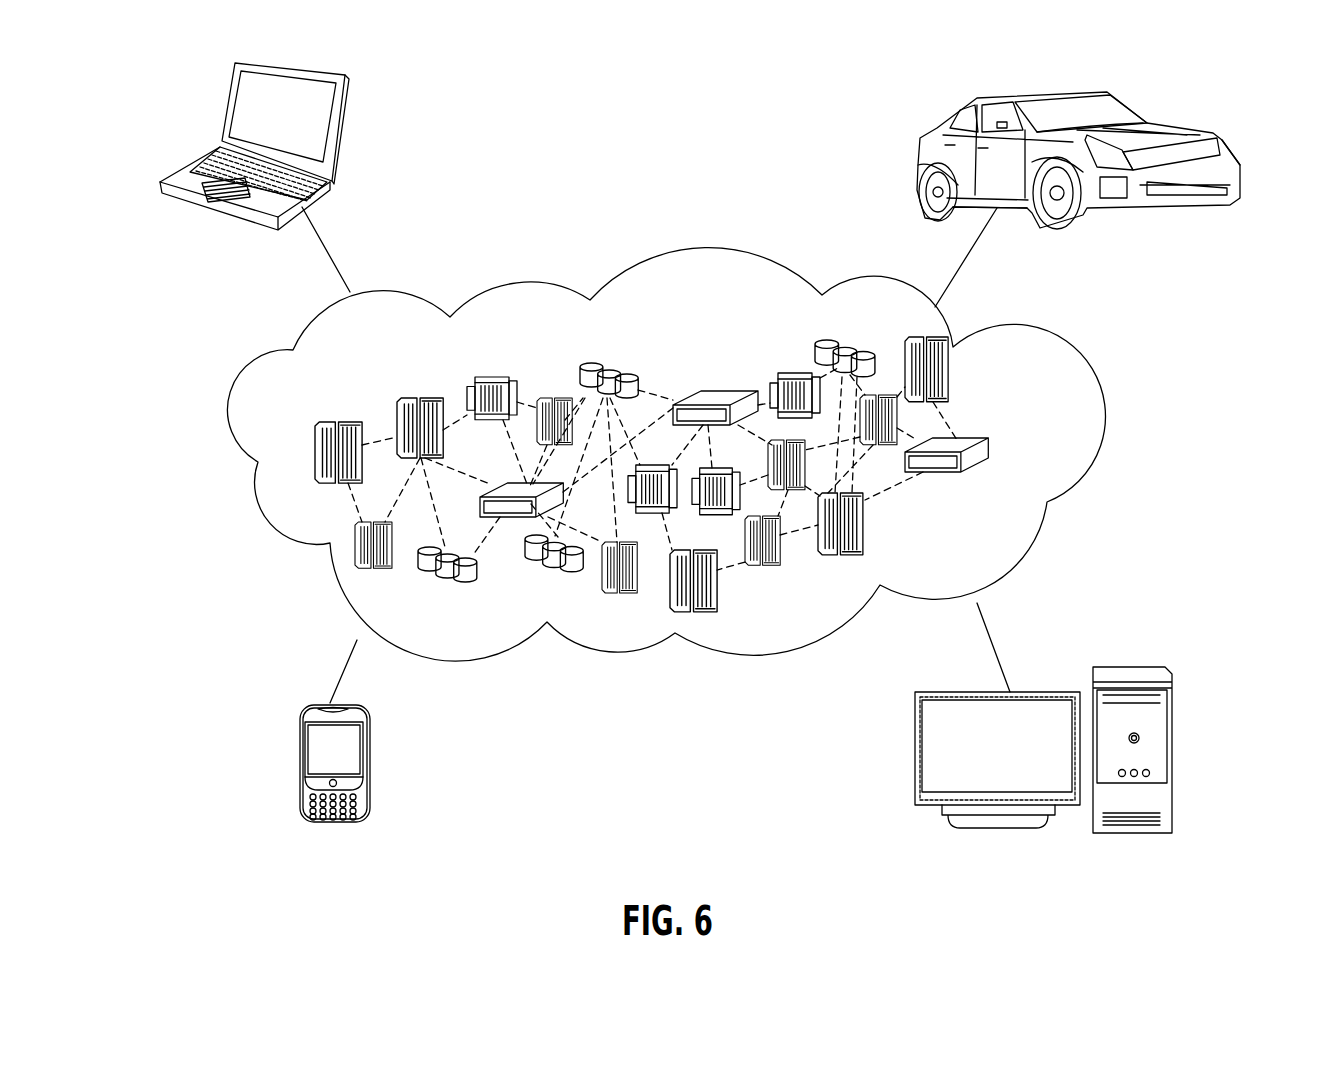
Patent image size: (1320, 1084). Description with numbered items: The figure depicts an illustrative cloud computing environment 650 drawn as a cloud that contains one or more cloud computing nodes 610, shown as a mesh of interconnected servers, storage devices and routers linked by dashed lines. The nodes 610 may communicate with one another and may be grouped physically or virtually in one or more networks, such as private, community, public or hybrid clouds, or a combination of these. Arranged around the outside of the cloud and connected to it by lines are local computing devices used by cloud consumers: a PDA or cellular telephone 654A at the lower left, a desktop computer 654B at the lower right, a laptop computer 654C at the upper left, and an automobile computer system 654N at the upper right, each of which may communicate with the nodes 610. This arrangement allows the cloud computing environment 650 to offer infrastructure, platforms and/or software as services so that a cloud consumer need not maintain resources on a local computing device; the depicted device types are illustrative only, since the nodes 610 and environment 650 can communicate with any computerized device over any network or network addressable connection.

The cloud computing environment 650 is at (1055, 365).
The cloud computing nodes 610 is at (1028, 453).
The PDA or cellular telephone 654A is at (300, 767).
The desktop computer 654B is at (1138, 665).
The laptop computer 654C is at (338, 130).
The automobile computer system 654N is at (925, 140).